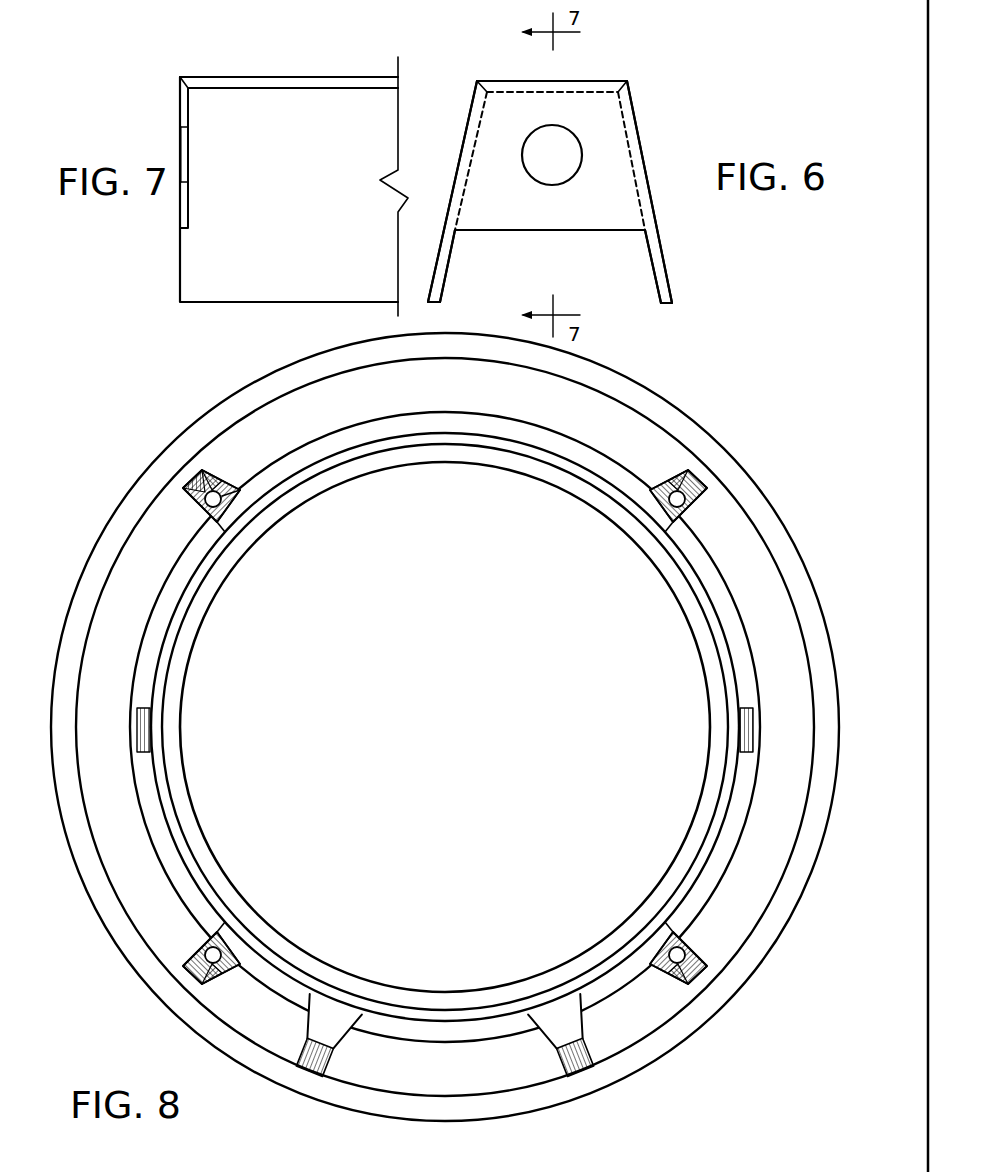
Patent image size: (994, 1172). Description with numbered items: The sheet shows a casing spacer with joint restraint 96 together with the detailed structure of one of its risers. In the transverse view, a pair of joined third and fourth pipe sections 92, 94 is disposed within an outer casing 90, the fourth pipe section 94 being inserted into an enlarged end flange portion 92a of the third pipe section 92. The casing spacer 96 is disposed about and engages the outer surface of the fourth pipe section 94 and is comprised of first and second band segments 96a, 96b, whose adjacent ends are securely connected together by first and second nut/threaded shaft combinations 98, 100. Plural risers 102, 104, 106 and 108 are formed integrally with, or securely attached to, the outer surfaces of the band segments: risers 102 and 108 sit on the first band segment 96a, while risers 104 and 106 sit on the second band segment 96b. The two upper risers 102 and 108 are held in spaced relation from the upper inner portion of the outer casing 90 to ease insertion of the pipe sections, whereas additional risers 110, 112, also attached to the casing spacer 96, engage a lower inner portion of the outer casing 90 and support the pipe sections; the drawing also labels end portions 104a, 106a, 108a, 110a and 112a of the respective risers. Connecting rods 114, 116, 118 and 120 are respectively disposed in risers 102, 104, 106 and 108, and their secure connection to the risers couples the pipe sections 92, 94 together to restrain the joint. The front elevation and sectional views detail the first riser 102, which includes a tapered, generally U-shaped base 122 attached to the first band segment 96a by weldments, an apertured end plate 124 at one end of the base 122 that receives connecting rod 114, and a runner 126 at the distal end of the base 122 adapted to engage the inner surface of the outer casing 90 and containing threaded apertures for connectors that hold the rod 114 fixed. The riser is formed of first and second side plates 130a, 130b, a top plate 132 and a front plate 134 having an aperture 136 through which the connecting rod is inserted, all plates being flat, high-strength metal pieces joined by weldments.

In FIG. 8, the outer casing 90 is at (767, 488).
In FIG. 8, the third pipe section 92 is at (690, 470).
In FIG. 8, the enlarged end flange portion 92a is at (688, 542).
In FIG. 8, the fourth pipe section 94 is at (692, 608).
In FIG. 8, the casing spacer with joint restraint 96 is at (255, 387).
In FIG. 8, the first band segment 96a is at (308, 452).
In FIG. 8, the second band segment 96b is at (482, 1017).
In FIG. 8, the first nut/threaded shaft combination 98 is at (132, 727).
In FIG. 8, the second nut/threaded shaft combination 100 is at (760, 703).
In FIG. 7, the first riser 102 is at (160, 229).
In FIG. 6, the first riser 102 is at (647, 73).
In FIG. 8, the first riser 102 is at (192, 521).
In FIG. 8, the riser 104 is at (205, 942).
In FIG. 8, the bracket hatched portion 104a is at (196, 996).
In FIG. 8, the riser 106 is at (672, 982).
In FIG. 8, the bracket hatched portion 106a is at (720, 978).
In FIG. 8, the riser 108 is at (645, 493).
In FIG. 8, the bracket hatched portion 108a is at (634, 458).
In FIG. 8, the riser 110 is at (313, 1022).
In FIG. 8, the tab end 110a is at (315, 1072).
In FIG. 8, the riser 112 is at (597, 1018).
In FIG. 8, the tab end 112a is at (597, 1070).
In FIG. 8, the connecting rod 114 is at (222, 530).
In FIG. 8, the connecting rod 116 is at (219, 950).
In FIG. 8, the connecting rod 118 is at (676, 950).
In FIG. 8, the connecting rod 120 is at (670, 527).
In FIG. 8, the base 122 is at (243, 489).
In FIG. 8, the apertured end plate 124 is at (220, 470).
In FIG. 8, the runner 126 is at (190, 477).
In FIG. 7, the first side plate 130a is at (262, 291).
In FIG. 6, the first side plate 130a is at (443, 258).
In FIG. 6, the second side plate 130b is at (656, 258).
In FIG. 7, the top plate 132 is at (253, 79).
In FIG. 6, the top plate 132 is at (512, 85).
In FIG. 7, the front plate 134 is at (180, 100).
In FIG. 6, the front plate 134 is at (628, 205).
In FIG. 7, the aperture 136 is at (183, 137).
In FIG. 6, the aperture 136 is at (571, 152).